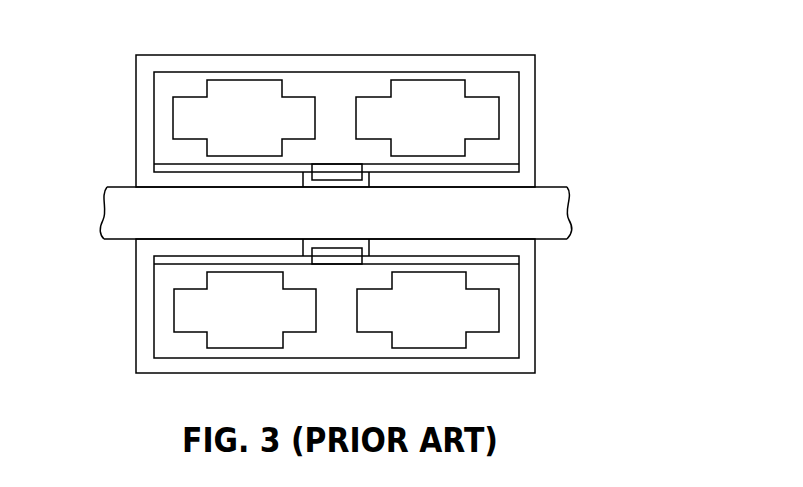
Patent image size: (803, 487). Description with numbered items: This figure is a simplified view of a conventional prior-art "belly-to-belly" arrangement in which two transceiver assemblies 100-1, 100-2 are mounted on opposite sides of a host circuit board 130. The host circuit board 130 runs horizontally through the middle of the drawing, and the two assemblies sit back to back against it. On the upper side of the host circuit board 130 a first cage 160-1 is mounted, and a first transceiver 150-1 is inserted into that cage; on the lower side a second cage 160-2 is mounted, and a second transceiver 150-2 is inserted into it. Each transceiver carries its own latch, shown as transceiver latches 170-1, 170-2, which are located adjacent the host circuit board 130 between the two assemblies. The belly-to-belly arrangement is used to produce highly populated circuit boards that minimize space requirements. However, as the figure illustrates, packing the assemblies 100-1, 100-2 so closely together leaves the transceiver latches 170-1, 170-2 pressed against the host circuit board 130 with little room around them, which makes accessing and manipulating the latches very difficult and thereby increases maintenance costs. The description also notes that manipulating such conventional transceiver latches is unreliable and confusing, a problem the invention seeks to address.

The transceiver assembly 100-1 is at (379, 102).
The transceiver assembly 100-2 is at (382, 320).
The host circuit board 130 is at (355, 223).
The first transceiver 150-1 is at (162, 86).
The second transceiver 150-2 is at (513, 339).
The first cage 160-1 is at (510, 63).
The second cage 160-2 is at (147, 365).
The transceiver latch 170-1 is at (345, 176).
The transceiver latch 170-2 is at (337, 256).